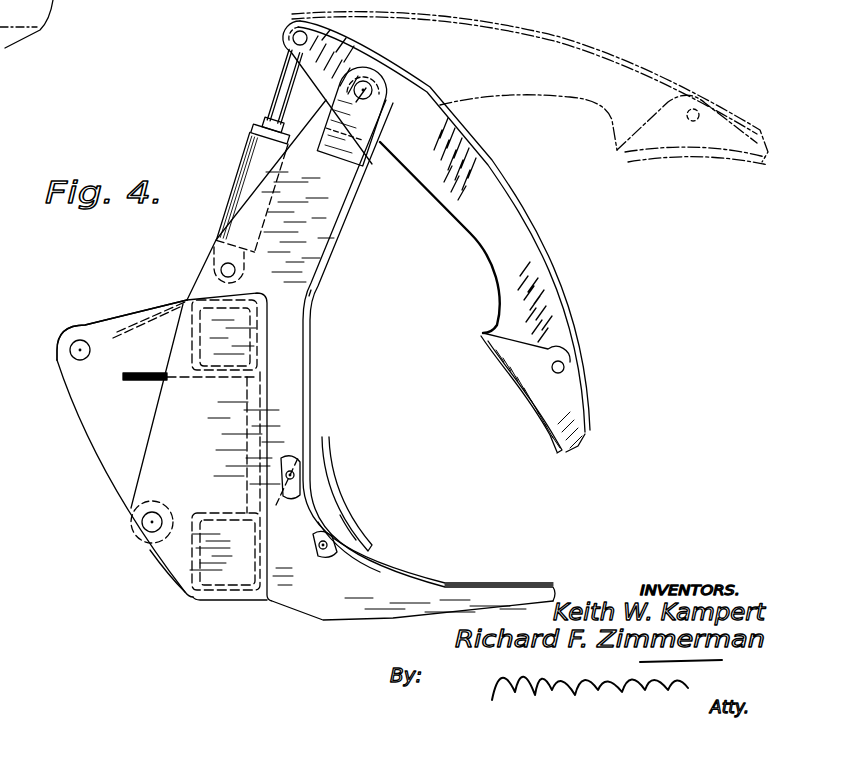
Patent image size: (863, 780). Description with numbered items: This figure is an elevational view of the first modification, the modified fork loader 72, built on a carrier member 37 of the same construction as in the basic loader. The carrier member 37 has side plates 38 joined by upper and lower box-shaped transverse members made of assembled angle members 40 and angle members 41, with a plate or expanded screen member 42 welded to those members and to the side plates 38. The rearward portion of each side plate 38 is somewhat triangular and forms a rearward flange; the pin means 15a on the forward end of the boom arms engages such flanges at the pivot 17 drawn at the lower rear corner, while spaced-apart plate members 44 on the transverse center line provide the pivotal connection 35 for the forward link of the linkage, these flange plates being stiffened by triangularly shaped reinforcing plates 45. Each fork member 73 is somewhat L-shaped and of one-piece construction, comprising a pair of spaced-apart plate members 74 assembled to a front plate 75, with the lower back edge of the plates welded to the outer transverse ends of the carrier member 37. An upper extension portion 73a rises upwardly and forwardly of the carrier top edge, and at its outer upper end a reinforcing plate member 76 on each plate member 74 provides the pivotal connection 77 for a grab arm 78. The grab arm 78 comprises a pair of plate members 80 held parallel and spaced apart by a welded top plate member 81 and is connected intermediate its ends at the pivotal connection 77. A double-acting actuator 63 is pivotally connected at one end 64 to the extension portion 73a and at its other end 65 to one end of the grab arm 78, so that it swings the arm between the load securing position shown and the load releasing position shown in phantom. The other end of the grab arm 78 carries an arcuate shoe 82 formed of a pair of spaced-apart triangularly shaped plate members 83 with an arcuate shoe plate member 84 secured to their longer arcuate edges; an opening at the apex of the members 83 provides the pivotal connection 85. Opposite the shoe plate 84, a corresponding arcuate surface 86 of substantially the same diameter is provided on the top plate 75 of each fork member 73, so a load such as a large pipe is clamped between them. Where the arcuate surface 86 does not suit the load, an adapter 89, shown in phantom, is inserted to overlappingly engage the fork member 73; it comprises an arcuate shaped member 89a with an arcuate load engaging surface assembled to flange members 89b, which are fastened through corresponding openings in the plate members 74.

The pin means 15a is at (131, 516).
The pivot pin 17 is at (150, 528).
The pivotal connection 35 is at (75, 355).
The carrier member 37 is at (174, 556).
The side plates 38 is at (217, 442).
The angle members 40 is at (258, 323).
The angle members 41 is at (213, 593).
The plate or expanded screen member 42 is at (284, 491).
The spaced-apart plate members 44 is at (100, 437).
The reinforcing plates 45 is at (140, 322).
The double-acting actuator 63 is at (243, 161).
The actuator end 64 is at (221, 270).
The actuator end 65 is at (290, 41).
The modified fork loader 72 is at (393, 386).
The fork members 73 is at (333, 592).
The upper extension portion 73a is at (304, 277).
The plate members 74 is at (300, 412).
The front plate 75 is at (442, 585).
The reinforcing plate member 76 is at (358, 152).
The pivotal connection 77 is at (367, 88).
The grab arm 78 is at (580, 62).
The plate members 80 is at (471, 208).
The top plate member 81 is at (655, 66).
The arcuate shoe 82 is at (559, 401).
The triangularly shaped plate members 83 is at (552, 349).
The arcuate shoe plate member 84 is at (520, 368).
The pivotal connection 85 is at (566, 365).
The arcuate surface 86 is at (372, 568).
The adapter 89 is at (316, 470).
The arcuate shaped member 89a is at (343, 518).
The flange members 89b is at (310, 522).